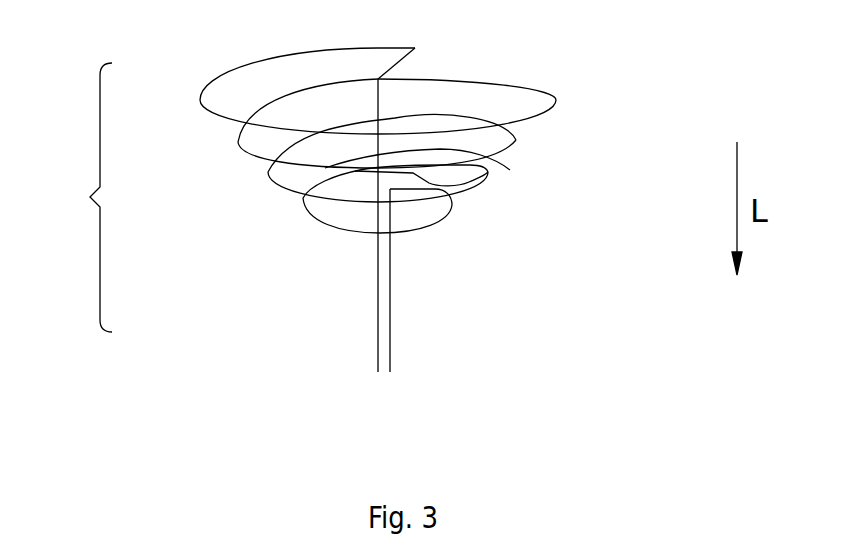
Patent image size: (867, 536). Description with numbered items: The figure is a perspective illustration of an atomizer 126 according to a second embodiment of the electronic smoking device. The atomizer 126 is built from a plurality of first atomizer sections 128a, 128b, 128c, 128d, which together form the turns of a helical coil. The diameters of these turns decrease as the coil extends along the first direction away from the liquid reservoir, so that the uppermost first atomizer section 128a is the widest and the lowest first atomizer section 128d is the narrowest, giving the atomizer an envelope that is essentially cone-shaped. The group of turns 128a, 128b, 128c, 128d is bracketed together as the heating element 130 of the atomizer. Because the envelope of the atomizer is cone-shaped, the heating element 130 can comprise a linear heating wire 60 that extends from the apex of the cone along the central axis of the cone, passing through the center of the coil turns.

The atomizer 126 is at (652, 95).
The first atomizer section 128a is at (237, 70).
The first atomizer section 128b is at (238, 143).
The first atomizer section 128c is at (270, 190).
The first atomizer section 128d is at (323, 226).
The heating element 130 is at (75, 197).
The linear heating wire 60 is at (500, 167).